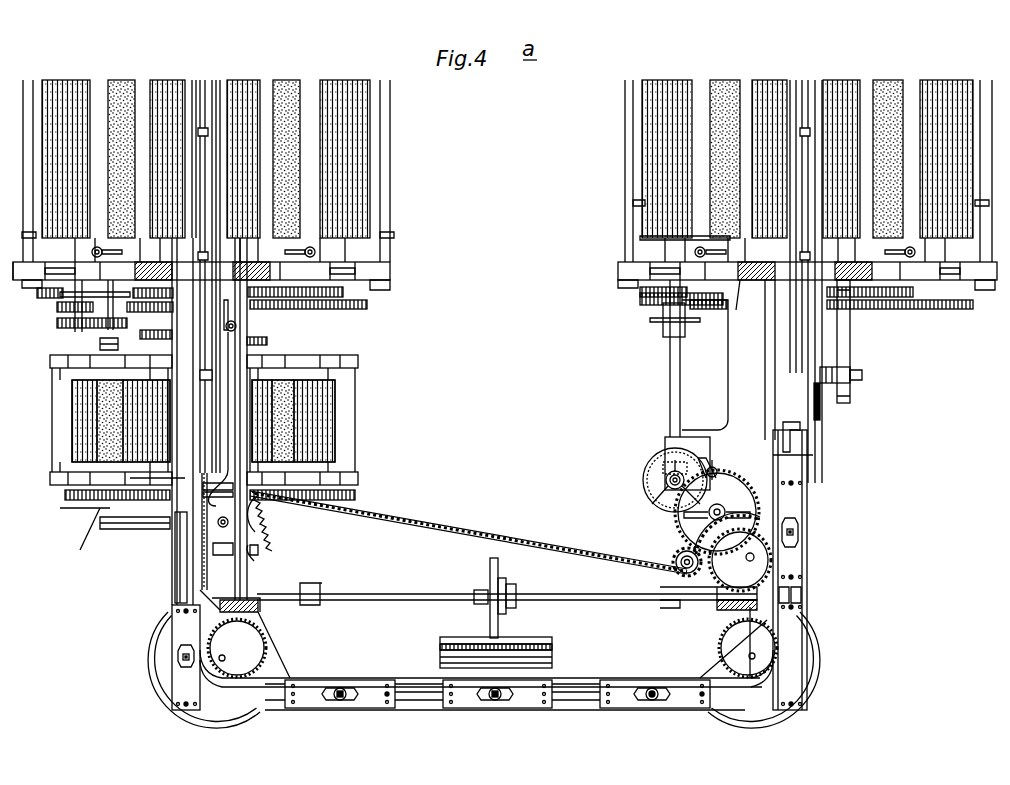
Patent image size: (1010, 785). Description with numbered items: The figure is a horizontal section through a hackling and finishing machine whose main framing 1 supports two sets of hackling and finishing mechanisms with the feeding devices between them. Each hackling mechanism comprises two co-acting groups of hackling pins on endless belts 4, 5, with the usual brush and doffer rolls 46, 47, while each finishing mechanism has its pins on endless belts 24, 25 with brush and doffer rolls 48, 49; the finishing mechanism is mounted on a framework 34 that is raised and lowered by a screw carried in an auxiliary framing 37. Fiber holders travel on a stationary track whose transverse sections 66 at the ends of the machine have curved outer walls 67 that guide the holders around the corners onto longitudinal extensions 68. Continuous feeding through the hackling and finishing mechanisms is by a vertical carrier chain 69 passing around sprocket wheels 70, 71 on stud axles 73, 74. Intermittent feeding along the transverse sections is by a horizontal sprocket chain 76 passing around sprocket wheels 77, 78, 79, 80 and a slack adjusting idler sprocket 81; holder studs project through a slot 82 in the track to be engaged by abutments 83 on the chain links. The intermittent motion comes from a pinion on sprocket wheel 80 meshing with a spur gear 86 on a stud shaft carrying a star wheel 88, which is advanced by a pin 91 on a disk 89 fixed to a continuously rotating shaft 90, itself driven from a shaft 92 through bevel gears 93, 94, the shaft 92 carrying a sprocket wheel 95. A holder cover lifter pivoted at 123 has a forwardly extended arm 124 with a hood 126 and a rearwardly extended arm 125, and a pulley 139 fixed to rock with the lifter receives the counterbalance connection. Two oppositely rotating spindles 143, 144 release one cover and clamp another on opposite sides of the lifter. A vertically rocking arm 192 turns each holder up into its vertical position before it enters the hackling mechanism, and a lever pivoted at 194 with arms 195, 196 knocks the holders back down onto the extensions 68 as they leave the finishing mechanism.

The main framing 1 is at (390, 272).
The endless belt 4 is at (167, 85).
The endless belt 5 is at (248, 88).
The endless belt 24 is at (258, 414).
The endless belt 25 is at (75, 403).
The framework 34 is at (70, 480).
The auxiliary framing 37 is at (140, 490).
The brush roll 46 is at (122, 82).
The doffer roll 47 is at (60, 82).
The brush roll 48 is at (135, 432).
The doffer roll 49 is at (82, 412).
The transverse section of track 66 is at (572, 710).
The curved outer wall 67 is at (158, 692).
The longitudinal extension 68 is at (182, 500).
The chain 69 is at (212, 84).
The sprocket wheel 70 is at (204, 572).
The sprocket wheel 71 is at (822, 408).
The stud axle 73 is at (260, 550).
The stud axle 74 is at (862, 376).
The sprocket chain 76 is at (466, 530).
The sprocket wheel 77 is at (264, 535).
The sprocket wheel 78 is at (237, 648).
The sprocket wheel 79 is at (748, 648).
The sprocket wheel 80 is at (740, 560).
The slack adjusting idler sprocket 81 is at (674, 556).
The slot 82 is at (418, 710).
The abutment 83 is at (340, 500).
The spur gear 86 is at (684, 534).
The star wheel 88 is at (738, 480).
The disk 89 is at (648, 476).
The continuously rotating shaft 90 is at (664, 480).
The pin 91 is at (712, 466).
The shaft 92 is at (672, 365).
The bevel gear 93 is at (668, 462).
The bevel gear 94 is at (666, 488).
The sprocket wheel 95 is at (640, 238).
The lifter pivot 123 is at (380, 600).
The forwardly extended arm 124 is at (492, 628).
The rearwardly extended arm 125 is at (490, 566).
The hood 126 is at (548, 637).
The pulley 139 is at (508, 608).
The spindle 143 is at (336, 710).
The spindle 144 is at (654, 710).
The vertically rocking arm 192 is at (813, 455).
The pivot 194 is at (238, 328).
The lever arm 195 is at (232, 310).
The lever arm 196 is at (236, 352).